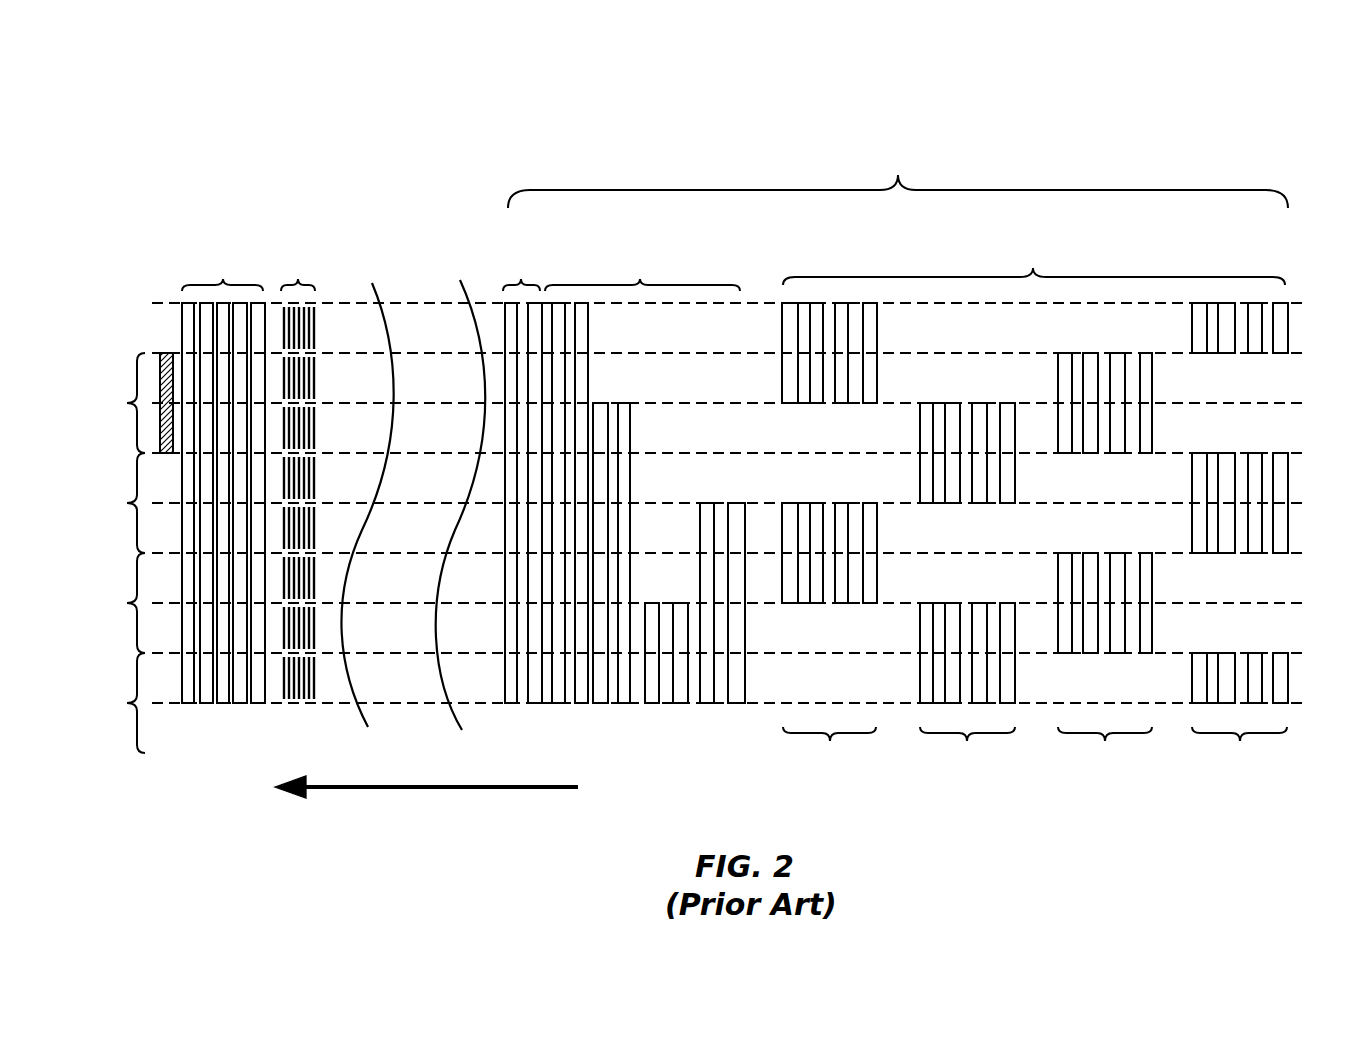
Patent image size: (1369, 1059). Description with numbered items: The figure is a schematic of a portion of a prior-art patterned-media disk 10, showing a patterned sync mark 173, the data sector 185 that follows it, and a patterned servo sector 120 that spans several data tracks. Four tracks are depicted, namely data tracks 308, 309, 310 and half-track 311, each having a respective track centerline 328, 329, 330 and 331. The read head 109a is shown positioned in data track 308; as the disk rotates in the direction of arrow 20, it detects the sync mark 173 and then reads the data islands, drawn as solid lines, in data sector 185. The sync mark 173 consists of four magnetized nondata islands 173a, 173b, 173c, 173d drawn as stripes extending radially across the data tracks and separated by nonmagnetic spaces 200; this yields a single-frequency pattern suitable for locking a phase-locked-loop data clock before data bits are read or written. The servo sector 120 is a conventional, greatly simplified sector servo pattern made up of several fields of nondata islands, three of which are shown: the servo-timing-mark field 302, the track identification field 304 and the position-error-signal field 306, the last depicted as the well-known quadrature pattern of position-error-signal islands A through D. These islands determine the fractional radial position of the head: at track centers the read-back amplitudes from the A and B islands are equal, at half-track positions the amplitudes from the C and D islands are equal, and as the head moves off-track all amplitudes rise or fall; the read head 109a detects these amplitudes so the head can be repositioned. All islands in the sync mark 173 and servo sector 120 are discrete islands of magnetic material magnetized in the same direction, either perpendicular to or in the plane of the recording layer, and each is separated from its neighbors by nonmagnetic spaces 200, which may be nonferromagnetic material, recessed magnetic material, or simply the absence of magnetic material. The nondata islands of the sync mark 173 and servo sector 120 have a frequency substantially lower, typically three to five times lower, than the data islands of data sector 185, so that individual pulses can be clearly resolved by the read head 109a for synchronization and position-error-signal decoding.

The patterned-media disk 10 is at (378, 264).
The arrow 20 is at (388, 797).
The read head 109a is at (170, 353).
The servo sector 120 is at (898, 170).
The sync mark 173 is at (223, 478).
The sync mark island 173a is at (188, 705).
The sync mark island 173b is at (210, 705).
The sync mark island 173c is at (235, 705).
The sync mark island 173d is at (257, 705).
The data sector 185 is at (304, 476).
The nonmagnetic spaces 200 is at (198, 680).
The servo-timing-mark (STM) field 302 is at (503, 285).
The track identification (TID) field 304 is at (718, 283).
The position-error-signal (PES) field 306 is at (866, 283).
The data track 308 is at (691, 378).
The data track 309 is at (691, 503).
The data track 310 is at (691, 603).
The half-track 311 is at (110, 703).
The track centerline 328 is at (1297, 400).
The track centerline 329 is at (1297, 500).
The track centerline 330 is at (1297, 600).
The track centerline 331 is at (1297, 700).